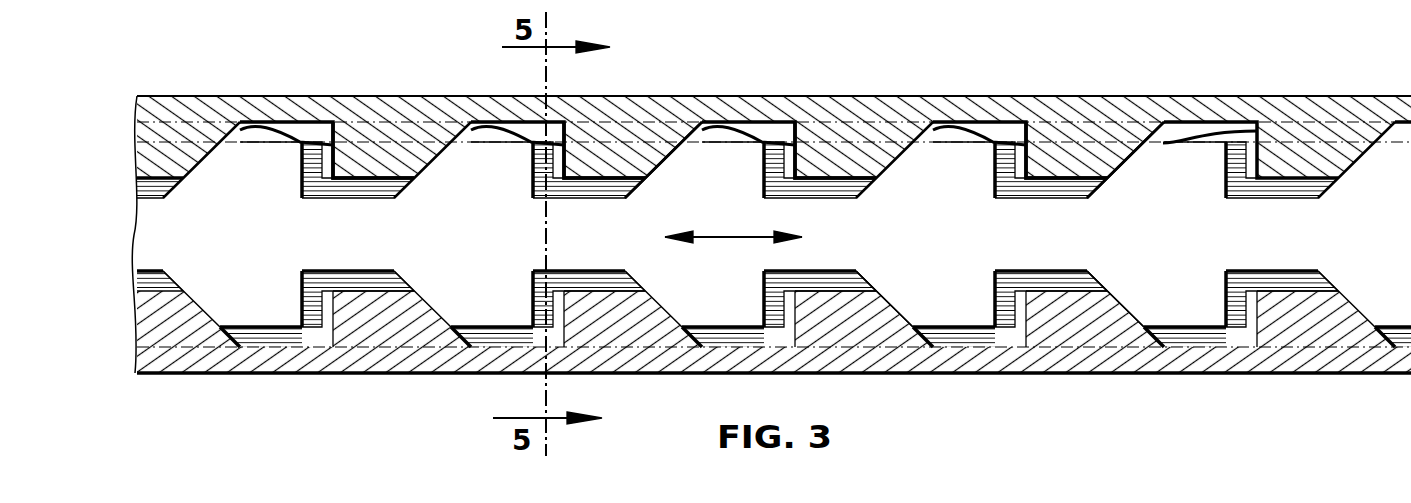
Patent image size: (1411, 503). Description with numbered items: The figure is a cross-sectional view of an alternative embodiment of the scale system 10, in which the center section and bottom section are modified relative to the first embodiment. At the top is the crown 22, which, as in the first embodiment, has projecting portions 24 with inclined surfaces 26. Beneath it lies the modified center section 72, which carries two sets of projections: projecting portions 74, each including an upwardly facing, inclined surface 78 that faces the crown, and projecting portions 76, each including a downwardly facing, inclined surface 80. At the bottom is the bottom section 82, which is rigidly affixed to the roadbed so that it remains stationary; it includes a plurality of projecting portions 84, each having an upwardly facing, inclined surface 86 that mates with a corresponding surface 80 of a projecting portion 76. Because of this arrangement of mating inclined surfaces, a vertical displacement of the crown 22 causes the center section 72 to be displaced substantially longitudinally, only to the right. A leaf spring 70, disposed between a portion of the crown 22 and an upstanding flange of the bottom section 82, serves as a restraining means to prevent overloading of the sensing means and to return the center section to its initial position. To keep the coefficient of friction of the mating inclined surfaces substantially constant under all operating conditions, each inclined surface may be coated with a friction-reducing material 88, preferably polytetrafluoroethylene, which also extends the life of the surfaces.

The scale system 10 is at (268, 88).
The crown 22 is at (743, 98).
The projecting portions 24 is at (600, 165).
The inclined surfaces 26 is at (657, 160).
The leaf spring 70 is at (1195, 135).
The center section 72 is at (948, 236).
The projecting portions 74 is at (498, 156).
The projecting portions 76 is at (500, 312).
The upwardly facing inclined surface 78 is at (417, 160).
The downwardly facing inclined surface 80 is at (417, 313).
The bottom section 82 is at (312, 373).
The projecting portions 84 is at (834, 303).
The upwardly facing inclined surface 86 is at (898, 312).
The friction-reducing material 88 is at (647, 147).